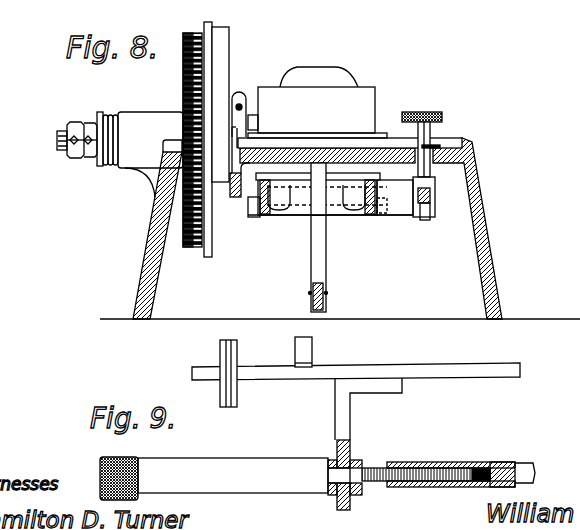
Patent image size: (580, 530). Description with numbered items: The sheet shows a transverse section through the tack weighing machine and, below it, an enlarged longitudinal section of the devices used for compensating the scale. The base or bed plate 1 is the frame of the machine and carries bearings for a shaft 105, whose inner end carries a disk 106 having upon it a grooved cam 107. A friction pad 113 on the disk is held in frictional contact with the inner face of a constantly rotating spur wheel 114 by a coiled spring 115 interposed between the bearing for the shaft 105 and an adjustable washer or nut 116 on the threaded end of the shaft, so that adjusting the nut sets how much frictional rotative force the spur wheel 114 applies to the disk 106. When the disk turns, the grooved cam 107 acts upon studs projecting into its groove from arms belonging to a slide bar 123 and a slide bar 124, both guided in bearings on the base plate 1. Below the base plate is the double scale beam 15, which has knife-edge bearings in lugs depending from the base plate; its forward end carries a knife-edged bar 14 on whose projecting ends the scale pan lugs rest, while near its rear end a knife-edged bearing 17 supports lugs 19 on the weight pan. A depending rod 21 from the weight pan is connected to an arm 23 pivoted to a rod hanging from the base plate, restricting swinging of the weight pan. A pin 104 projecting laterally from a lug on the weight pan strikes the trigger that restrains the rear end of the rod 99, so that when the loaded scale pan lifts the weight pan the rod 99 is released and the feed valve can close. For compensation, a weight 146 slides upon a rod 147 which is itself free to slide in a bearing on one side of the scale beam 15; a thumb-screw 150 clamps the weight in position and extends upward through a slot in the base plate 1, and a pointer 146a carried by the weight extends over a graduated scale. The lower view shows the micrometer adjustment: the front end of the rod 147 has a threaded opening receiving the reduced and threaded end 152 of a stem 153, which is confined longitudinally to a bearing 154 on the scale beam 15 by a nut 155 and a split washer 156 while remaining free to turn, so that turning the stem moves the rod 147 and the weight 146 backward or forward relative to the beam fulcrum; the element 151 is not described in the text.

In FIG. 8, the base or bed plate 1 is at (150, 233).
In FIG. 9, the knife-edged bar 14 is at (237, 352).
In FIG. 8, the double scale beam 15 is at (265, 217).
In FIG. 9, the double scale beam 15 is at (268, 380).
In FIG. 8, the knife-edged bearing 17 is at (331, 215).
In FIG. 8, the lugs 19 is at (283, 212).
In FIG. 8, the depending rod 21 is at (326, 248).
In FIG. 8, the arm 23 is at (326, 300).
In FIG. 8, the rod 99 is at (240, 104).
In FIG. 8, the pin 104 is at (258, 120).
In FIG. 8, the shaft 105 is at (58, 141).
In FIG. 8, the disk 106 is at (207, 22).
In FIG. 8, the grooved cam 107 is at (229, 38).
In FIG. 8, the friction pad 113 is at (200, 74).
In FIG. 8, the spur wheel 114 is at (184, 94).
In FIG. 8, the coiled spring 115 is at (105, 163).
In FIG. 8, the adjustable washer or nut 116 is at (99, 114).
In FIG. 8, the slide bar 123 is at (237, 199).
In FIG. 8, the slide bar 124 is at (234, 198).
In FIG. 8, the weight 146 is at (439, 178).
In FIG. 8, the pointer 146a is at (439, 147).
In FIG. 8, the rod 147 is at (431, 195).
In FIG. 9, the rod 147 is at (487, 463).
In FIG. 8, the thumb-screw 150 is at (422, 137).
In FIG. 8, the pin 151 is at (424, 221).
In FIG. 9, the reduced and threaded end 152 is at (376, 468).
In FIG. 9, the stem 153 is at (214, 478).
In FIG. 9, the bearing 154 is at (348, 420).
In FIG. 9, the nut 155 is at (360, 494).
In FIG. 9, the split washer 156 is at (338, 458).